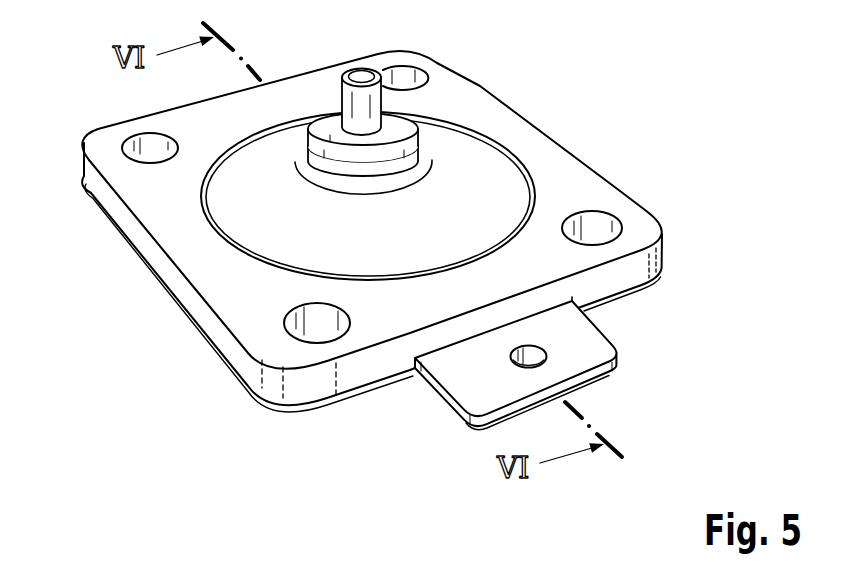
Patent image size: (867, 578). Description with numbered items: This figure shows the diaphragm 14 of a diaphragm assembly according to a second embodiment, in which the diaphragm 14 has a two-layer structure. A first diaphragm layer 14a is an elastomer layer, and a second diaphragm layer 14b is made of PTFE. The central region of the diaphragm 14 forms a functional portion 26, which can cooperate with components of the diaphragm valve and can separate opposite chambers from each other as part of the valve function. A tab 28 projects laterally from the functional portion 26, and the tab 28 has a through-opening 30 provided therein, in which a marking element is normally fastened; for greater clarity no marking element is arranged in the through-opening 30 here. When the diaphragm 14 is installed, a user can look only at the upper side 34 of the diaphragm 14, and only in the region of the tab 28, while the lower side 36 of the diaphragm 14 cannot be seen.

The diaphragm 14 is at (488, 105).
The first diaphragm layer 14a is at (200, 264).
The second diaphragm layer 14b is at (340, 401).
The functional portion 26 is at (570, 169).
The tab 28 is at (638, 320).
The through-opening 30 is at (550, 347).
The upper side 34 is at (153, 206).
The lower side 36 is at (213, 350).